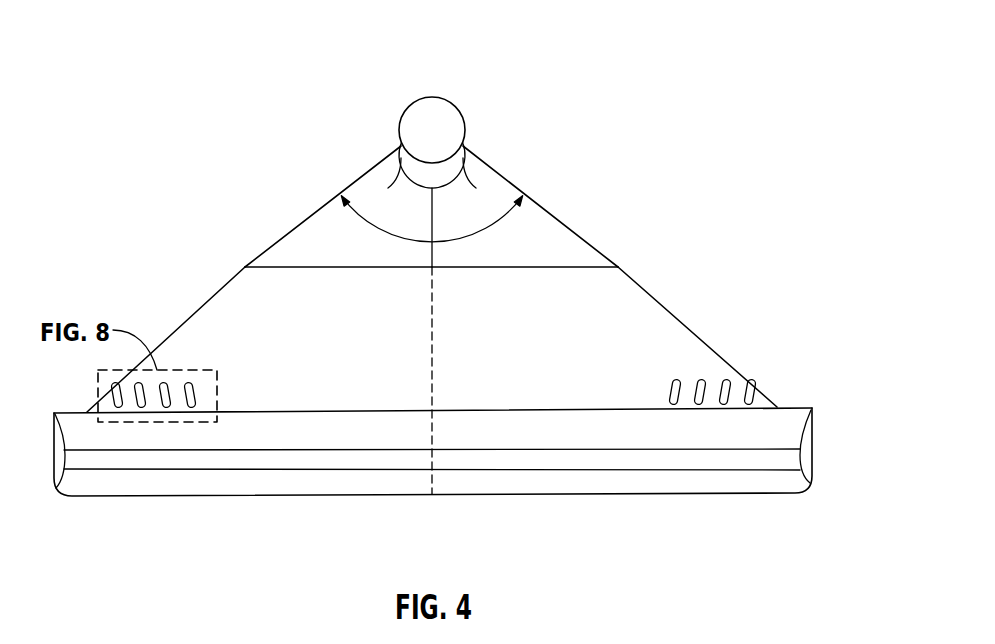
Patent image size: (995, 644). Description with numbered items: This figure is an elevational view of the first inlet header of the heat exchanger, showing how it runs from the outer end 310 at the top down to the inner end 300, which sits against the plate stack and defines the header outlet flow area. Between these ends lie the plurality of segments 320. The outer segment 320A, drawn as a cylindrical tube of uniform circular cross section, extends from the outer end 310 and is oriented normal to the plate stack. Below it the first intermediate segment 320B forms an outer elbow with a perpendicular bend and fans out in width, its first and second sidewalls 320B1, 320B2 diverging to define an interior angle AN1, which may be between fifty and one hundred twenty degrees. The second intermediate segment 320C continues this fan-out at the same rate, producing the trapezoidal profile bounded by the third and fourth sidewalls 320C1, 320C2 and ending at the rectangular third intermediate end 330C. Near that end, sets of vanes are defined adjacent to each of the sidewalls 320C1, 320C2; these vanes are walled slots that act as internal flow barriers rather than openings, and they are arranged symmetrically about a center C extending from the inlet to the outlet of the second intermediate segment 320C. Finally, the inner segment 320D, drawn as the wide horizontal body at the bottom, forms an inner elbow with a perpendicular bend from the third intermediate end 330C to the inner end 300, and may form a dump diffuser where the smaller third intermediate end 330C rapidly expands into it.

The inner end 300 is at (805, 457).
The outer end 310 is at (447, 100).
The plurality of segments 320 is at (415, 110).
The outer segment 320A is at (460, 130).
The first intermediate segment 320B is at (465, 206).
The first sidewall 320B1 is at (340, 194).
The second sidewall 320B2 is at (523, 194).
The second intermediate segment 320C is at (471, 339).
The third sidewall 320C1 is at (198, 311).
The fourth sidewall 320C2 is at (728, 364).
The inner segment 320D is at (812, 420).
The third intermediate end 330C is at (65, 412).
The interior angle AN1 is at (383, 232).
The center C is at (430, 372).